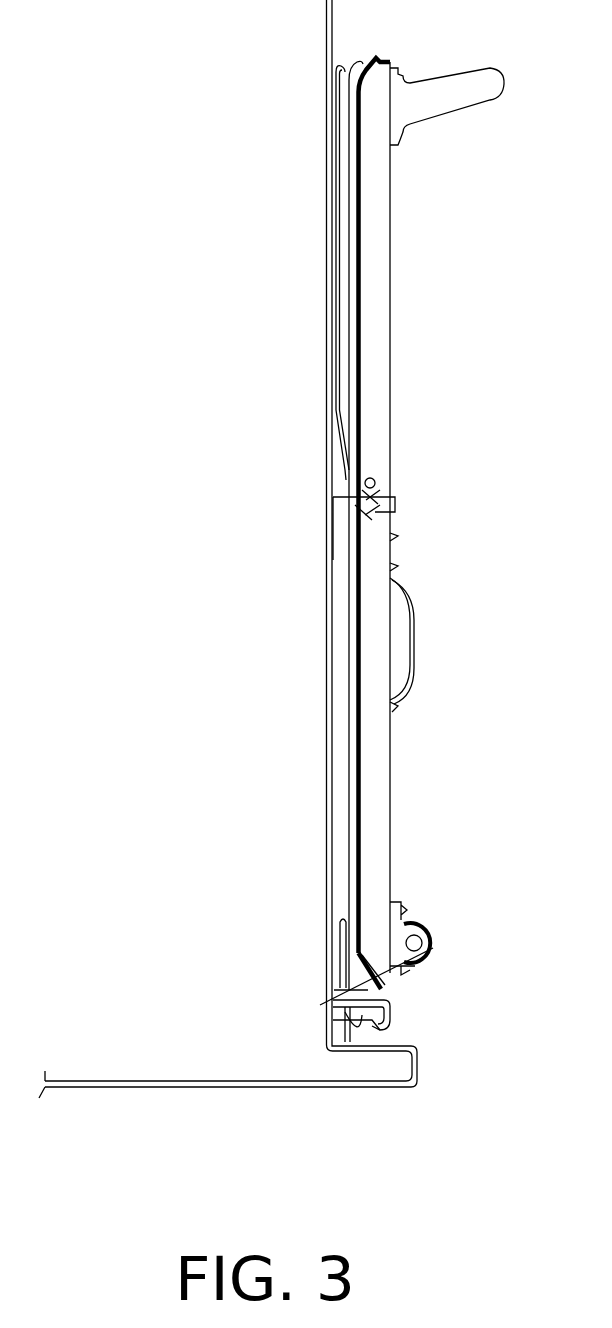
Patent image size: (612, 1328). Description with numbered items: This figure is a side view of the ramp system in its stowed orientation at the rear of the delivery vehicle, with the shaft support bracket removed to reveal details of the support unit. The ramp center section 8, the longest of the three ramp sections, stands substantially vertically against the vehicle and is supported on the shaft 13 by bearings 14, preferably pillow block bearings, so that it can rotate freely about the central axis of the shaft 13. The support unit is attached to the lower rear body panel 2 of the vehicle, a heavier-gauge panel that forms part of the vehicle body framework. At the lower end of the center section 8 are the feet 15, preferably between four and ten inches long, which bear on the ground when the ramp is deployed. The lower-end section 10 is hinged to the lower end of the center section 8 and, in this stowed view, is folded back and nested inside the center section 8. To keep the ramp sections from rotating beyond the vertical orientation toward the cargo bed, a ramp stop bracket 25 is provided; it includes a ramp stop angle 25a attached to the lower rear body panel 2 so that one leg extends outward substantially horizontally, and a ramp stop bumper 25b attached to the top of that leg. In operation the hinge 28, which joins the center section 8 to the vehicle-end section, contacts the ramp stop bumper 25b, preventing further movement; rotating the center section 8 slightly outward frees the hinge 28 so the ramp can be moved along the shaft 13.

The lower rear body panel 2 is at (328, 857).
The center section 8 is at (380, 278).
The lower-end section 10 is at (335, 272).
The shaft 13 is at (435, 950).
The bearings 14 is at (413, 920).
The feet 15 is at (458, 113).
The ramp stop bracket 25 is at (373, 1024).
The ramp stop angle 25a is at (395, 1027).
The ramp stop bumper 25b is at (360, 1015).
The hinge 28 is at (328, 998).